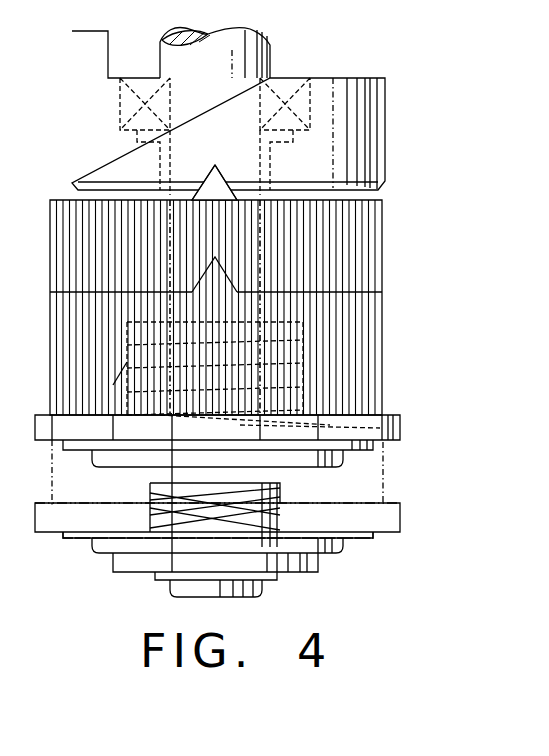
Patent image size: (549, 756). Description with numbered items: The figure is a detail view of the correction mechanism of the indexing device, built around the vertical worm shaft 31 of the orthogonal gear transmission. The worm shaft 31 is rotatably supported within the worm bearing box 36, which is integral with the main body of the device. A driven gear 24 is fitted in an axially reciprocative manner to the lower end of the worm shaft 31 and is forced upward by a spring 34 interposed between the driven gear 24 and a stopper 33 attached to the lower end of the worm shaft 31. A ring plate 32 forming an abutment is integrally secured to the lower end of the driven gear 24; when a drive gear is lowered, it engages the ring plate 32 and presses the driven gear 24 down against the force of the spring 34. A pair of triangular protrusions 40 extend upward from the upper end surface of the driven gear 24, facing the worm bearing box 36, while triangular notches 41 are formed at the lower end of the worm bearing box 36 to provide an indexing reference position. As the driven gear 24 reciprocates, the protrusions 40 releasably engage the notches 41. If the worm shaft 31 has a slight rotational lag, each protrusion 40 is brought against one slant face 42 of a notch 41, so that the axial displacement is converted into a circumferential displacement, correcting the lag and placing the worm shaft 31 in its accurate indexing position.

The driven gear 24 is at (383, 315).
The worm shaft 31 is at (258, 53).
The ring plate 32 is at (400, 428).
The stopper 33 is at (318, 567).
The spring 34 is at (298, 485).
The worm bearing box 36 is at (385, 108).
The protrusions 40 is at (212, 205).
The notches 41 is at (205, 172).
The slant face 42 is at (223, 173).